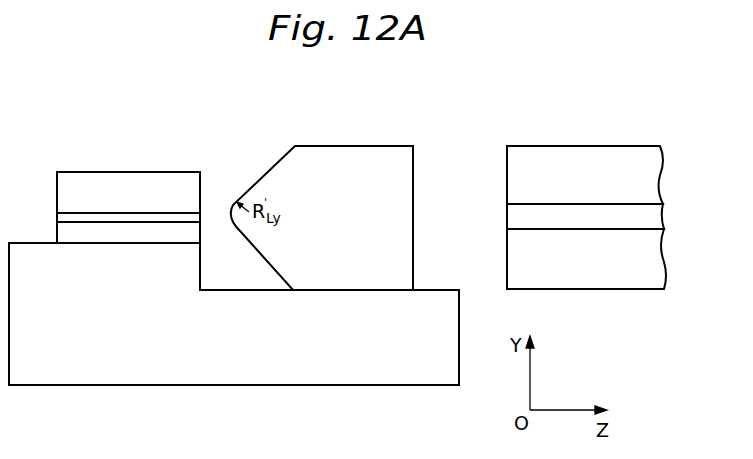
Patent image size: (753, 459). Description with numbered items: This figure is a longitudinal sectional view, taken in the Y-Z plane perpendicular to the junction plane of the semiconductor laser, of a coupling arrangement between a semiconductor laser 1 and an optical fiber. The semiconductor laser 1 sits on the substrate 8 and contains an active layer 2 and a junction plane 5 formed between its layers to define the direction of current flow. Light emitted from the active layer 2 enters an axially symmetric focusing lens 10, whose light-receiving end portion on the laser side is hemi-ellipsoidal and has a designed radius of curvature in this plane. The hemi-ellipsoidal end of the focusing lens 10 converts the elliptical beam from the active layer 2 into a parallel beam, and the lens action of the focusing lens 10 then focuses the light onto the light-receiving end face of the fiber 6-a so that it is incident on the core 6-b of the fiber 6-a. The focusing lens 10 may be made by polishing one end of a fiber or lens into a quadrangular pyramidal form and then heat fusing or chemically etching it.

The semiconductor laser 1 is at (174, 172).
The active layer 2 is at (139, 220).
The junction plane 5 is at (98, 211).
The substrate 8 is at (228, 384).
The focusing lens 10 is at (366, 145).
The fiber 6-a is at (603, 145).
The core 6-b is at (665, 219).